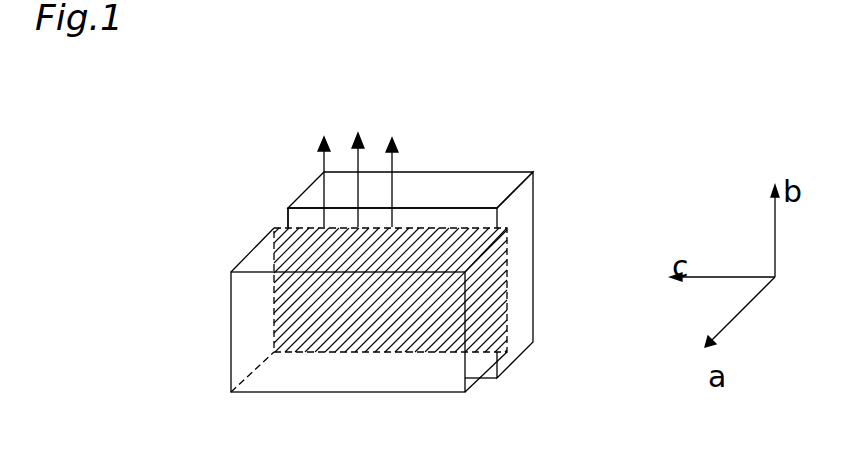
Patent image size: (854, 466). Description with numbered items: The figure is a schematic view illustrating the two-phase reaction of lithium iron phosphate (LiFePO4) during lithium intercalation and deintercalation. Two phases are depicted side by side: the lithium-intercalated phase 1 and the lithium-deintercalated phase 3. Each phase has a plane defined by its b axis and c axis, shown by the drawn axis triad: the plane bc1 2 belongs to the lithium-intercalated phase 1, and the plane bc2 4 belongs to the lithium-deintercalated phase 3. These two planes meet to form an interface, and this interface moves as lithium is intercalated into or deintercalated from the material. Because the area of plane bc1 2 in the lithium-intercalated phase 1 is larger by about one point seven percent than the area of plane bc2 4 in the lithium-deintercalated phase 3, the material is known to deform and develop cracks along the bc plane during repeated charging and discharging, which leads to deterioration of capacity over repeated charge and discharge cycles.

The lithium-intercalated phase of LiFePO4 1 is at (485, 188).
The plane bc1 2 is at (317, 220).
The lithium-deintercalated phase of LiFePO4 3 is at (260, 357).
The plane bc2 4 is at (482, 290).